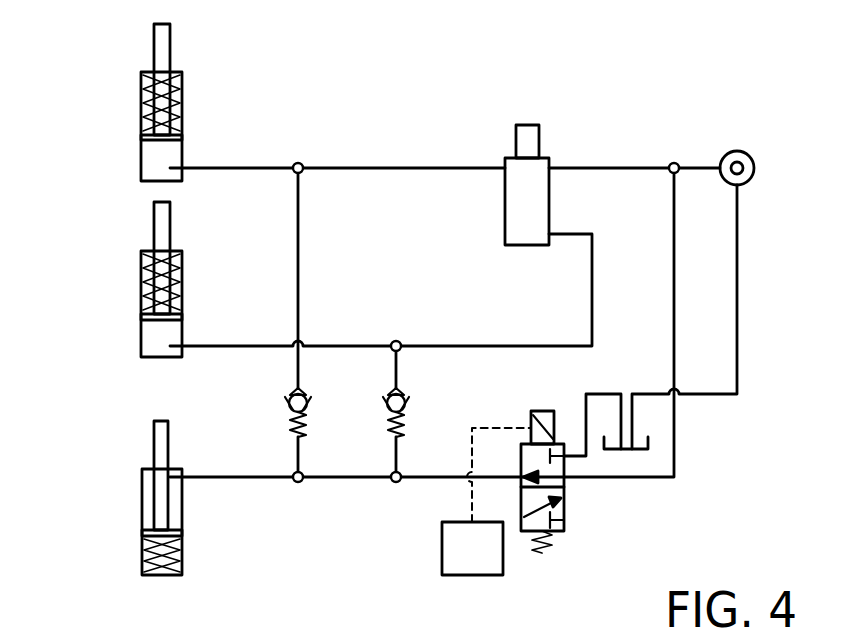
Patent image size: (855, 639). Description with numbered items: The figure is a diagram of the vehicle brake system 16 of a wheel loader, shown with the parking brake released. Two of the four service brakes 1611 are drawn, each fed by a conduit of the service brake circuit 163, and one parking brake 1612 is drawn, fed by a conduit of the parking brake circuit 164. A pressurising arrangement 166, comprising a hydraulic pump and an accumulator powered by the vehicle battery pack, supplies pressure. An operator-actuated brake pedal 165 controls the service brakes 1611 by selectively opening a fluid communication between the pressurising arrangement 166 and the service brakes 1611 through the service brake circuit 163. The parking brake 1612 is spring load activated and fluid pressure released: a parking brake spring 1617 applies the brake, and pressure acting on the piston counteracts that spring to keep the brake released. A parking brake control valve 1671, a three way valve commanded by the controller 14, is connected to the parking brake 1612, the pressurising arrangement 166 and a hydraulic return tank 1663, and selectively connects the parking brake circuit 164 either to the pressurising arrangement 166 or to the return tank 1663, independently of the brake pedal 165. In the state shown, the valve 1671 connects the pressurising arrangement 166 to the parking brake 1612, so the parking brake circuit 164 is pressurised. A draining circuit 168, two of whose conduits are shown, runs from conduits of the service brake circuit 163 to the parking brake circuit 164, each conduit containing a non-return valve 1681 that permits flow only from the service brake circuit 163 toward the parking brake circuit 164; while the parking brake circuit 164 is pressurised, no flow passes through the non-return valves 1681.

The vehicle brake system 16 is at (521, 63).
The service brake 1611 is at (141, 123).
The parking brake 1612 is at (105, 527).
The parking brake spring 1617 is at (157, 575).
The service brake circuit 163 is at (238, 346).
The parking brake circuit 164 is at (325, 477).
The draining circuit 168 is at (335, 339).
The non-return valve 1681 is at (306, 395).
The brake pedal 165 is at (549, 158).
The pressurising arrangement 166 is at (737, 151).
The hydraulic return tank 1663 is at (648, 443).
The parking brake control valve 1671 is at (564, 510).
The controller 14 is at (477, 576).